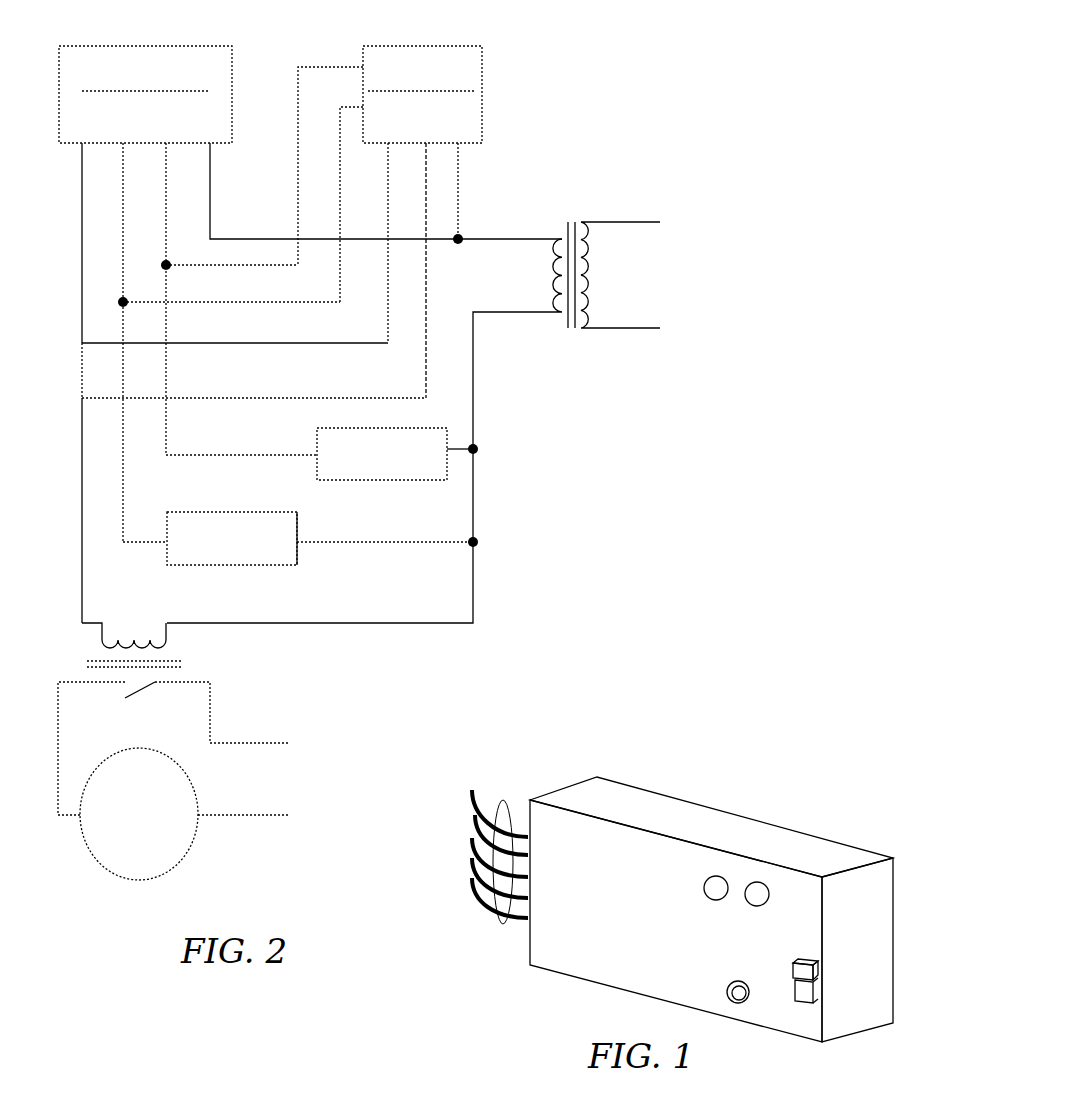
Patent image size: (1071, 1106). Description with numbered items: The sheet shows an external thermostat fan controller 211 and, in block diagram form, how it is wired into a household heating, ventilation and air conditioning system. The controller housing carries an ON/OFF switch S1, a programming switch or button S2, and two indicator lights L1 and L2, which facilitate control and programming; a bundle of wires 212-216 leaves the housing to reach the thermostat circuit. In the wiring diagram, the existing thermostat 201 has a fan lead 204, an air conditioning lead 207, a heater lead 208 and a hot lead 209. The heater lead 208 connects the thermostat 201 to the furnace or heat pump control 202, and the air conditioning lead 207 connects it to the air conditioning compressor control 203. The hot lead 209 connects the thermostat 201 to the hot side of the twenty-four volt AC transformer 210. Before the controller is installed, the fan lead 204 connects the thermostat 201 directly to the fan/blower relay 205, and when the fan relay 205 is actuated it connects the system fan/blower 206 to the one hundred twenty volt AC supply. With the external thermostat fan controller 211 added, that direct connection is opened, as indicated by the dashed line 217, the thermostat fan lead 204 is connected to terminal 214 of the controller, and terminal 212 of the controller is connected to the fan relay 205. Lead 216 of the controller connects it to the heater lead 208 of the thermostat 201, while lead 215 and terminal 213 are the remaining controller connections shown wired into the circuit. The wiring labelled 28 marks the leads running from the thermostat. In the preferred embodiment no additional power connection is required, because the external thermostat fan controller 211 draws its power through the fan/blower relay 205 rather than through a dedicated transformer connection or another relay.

In FIG. 2, the thermostat 201 is at (222, 58).
In FIG. 2, the external thermostat fan controller 211 is at (470, 63).
In FIG. 1, the external thermostat fan controller 211 is at (759, 733).
In FIG. 2, the fan lead 204 is at (87, 152).
In FIG. 2, the A/C lead 207 is at (135, 152).
In FIG. 2, the heater lead 208 is at (177, 152).
In FIG. 2, the hot lead 209 is at (220, 152).
In FIG. 2, the terminal 212 is at (433, 157).
In FIG. 2, the terminal 213 is at (465, 157).
In FIG. 2, the terminal 214 is at (393, 157).
In FIG. 2, the lead 215 is at (352, 96).
In FIG. 2, the lead 216 is at (350, 60).
In FIG. 2, the dashed line 217 is at (85, 363).
In FIG. 2, the HVAC system wiring 28 is at (82, 285).
In FIG. 2, the 24 volt AC transformer 210 is at (605, 308).
In FIG. 2, the furnace or heat pump control 202 is at (427, 440).
In FIG. 2, the air conditioning compressor control 203 is at (290, 533).
In FIG. 2, the fan/blower relay 205 is at (77, 656).
In FIG. 2, the system fan/blower 206 is at (103, 846).
In FIG. 1, the controller terminals and leads 212-216 is at (503, 925).
In FIG. 1, the indicator light L1 is at (710, 893).
In FIG. 1, the indicator light L2 is at (752, 900).
In FIG. 1, the ON/OFF switch S1 is at (818, 988).
In FIG. 1, the programming switch S2 is at (738, 1003).